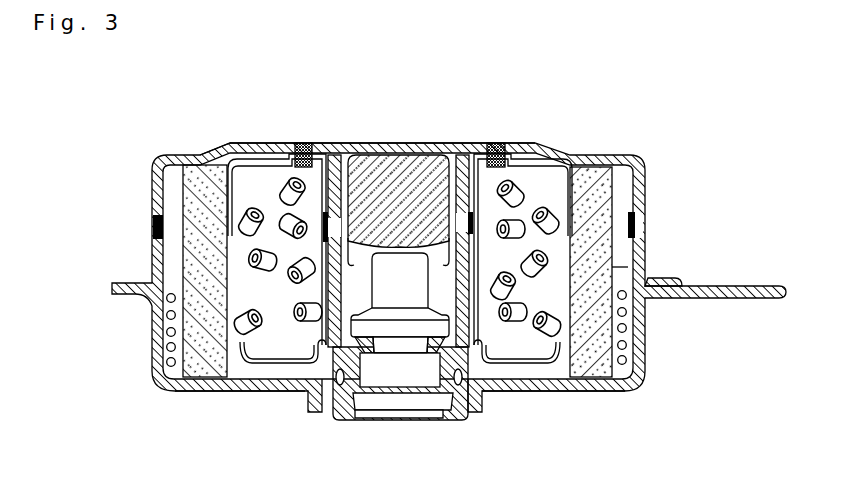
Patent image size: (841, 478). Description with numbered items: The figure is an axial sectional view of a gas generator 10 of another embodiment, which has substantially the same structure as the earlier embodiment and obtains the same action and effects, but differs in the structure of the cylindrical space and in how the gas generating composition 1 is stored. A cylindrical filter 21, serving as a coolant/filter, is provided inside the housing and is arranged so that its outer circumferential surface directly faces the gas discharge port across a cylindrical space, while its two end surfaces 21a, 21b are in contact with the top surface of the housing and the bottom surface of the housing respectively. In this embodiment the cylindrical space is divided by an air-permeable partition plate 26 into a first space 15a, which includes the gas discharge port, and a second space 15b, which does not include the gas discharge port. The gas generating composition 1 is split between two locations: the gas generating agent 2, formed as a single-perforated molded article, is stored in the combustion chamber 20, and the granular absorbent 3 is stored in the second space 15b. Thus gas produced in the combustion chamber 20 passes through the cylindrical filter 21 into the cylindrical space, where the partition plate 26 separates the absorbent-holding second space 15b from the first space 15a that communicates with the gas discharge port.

The gas generator 10 is at (416, 122).
The combustion chamber 20 is at (527, 173).
The cylindrical filter 21 is at (183, 187).
The end surface of the cylindrical filter 21a is at (200, 157).
The end surface of the cylindrical filter 21b is at (203, 384).
The first space 15a is at (170, 203).
The second space 15b is at (170, 280).
The gas generating composition 1 is at (690, 193).
The gas generating agent 2 is at (550, 207).
The granular absorbent 3 is at (640, 283).
The air-permeable partition plate 26 is at (627, 278).